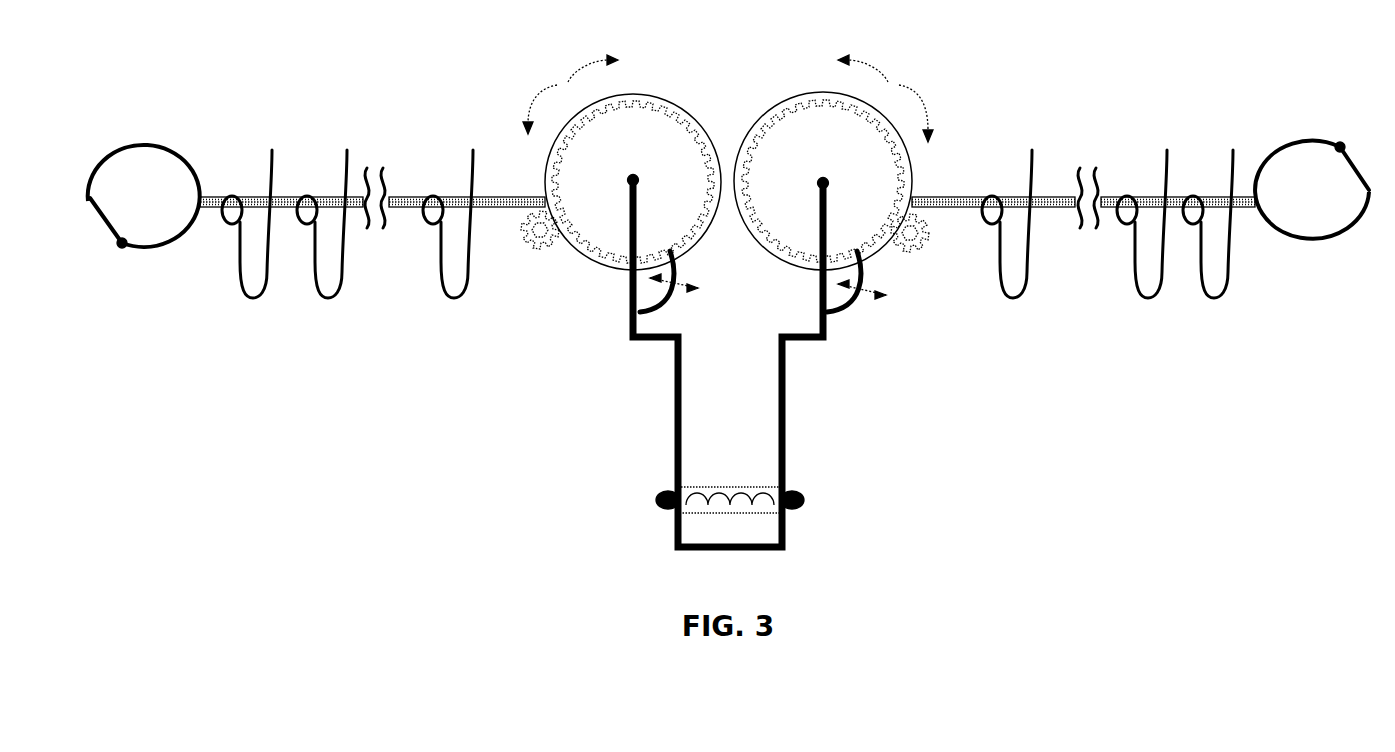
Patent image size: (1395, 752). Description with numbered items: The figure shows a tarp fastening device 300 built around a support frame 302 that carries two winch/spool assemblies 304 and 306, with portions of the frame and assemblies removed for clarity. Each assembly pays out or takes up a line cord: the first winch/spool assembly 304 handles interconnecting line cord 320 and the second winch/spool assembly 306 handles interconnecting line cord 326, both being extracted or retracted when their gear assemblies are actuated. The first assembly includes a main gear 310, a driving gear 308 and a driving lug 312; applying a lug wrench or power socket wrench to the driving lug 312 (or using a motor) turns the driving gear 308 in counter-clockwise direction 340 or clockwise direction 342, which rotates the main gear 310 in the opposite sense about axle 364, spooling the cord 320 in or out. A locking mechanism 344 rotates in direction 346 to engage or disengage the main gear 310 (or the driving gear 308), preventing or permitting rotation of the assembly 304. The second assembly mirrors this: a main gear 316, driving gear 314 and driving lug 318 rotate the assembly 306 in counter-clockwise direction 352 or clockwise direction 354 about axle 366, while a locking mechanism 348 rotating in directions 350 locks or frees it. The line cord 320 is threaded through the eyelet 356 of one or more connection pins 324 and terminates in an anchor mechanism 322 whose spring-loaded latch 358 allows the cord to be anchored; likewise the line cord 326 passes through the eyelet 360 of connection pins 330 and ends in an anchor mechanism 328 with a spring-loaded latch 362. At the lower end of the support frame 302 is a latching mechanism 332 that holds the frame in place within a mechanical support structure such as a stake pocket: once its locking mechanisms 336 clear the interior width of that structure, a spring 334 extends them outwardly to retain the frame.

The tarp fastening device 300 is at (1287, 252).
The support frame 302 is at (785, 400).
The winch/spool assembly 304 is at (633, 92).
The winch/spool assembly 306 is at (823, 91).
The driving gear 308 is at (540, 232).
The main gear 310 is at (617, 258).
The driving lug 312 is at (533, 240).
The driving gear 314 is at (908, 250).
The main gear 316 is at (750, 222).
The driving lug 318 is at (922, 235).
The interconnecting line cord 320 is at (526, 196).
The anchor mechanism 322 is at (150, 150).
The connection pin 324 is at (253, 298).
The interconnecting line cord 326 is at (1057, 196).
The anchor mechanism 328 is at (1297, 143).
The connection pin 330 is at (1151, 298).
The latching mechanism 332 is at (765, 487).
The spring 334 is at (768, 497).
The locking mechanisms 336 is at (660, 498).
The counter-clockwise direction 340 is at (538, 98).
The clockwise direction 342 is at (585, 62).
The locking mechanism 344 is at (660, 312).
The direction 346 is at (685, 285).
The locking mechanism 348 is at (855, 318).
The directions 350 is at (870, 300).
The counter-clockwise direction 352 is at (878, 67).
The clockwise direction 354 is at (918, 109).
The eyelet 356 is at (430, 228).
The spring-loaded latch 358 is at (107, 226).
The eyelet 360 is at (1115, 216).
The spring-loaded latch 362 is at (1342, 160).
The axle 364 is at (628, 178).
The axle 366 is at (818, 183).